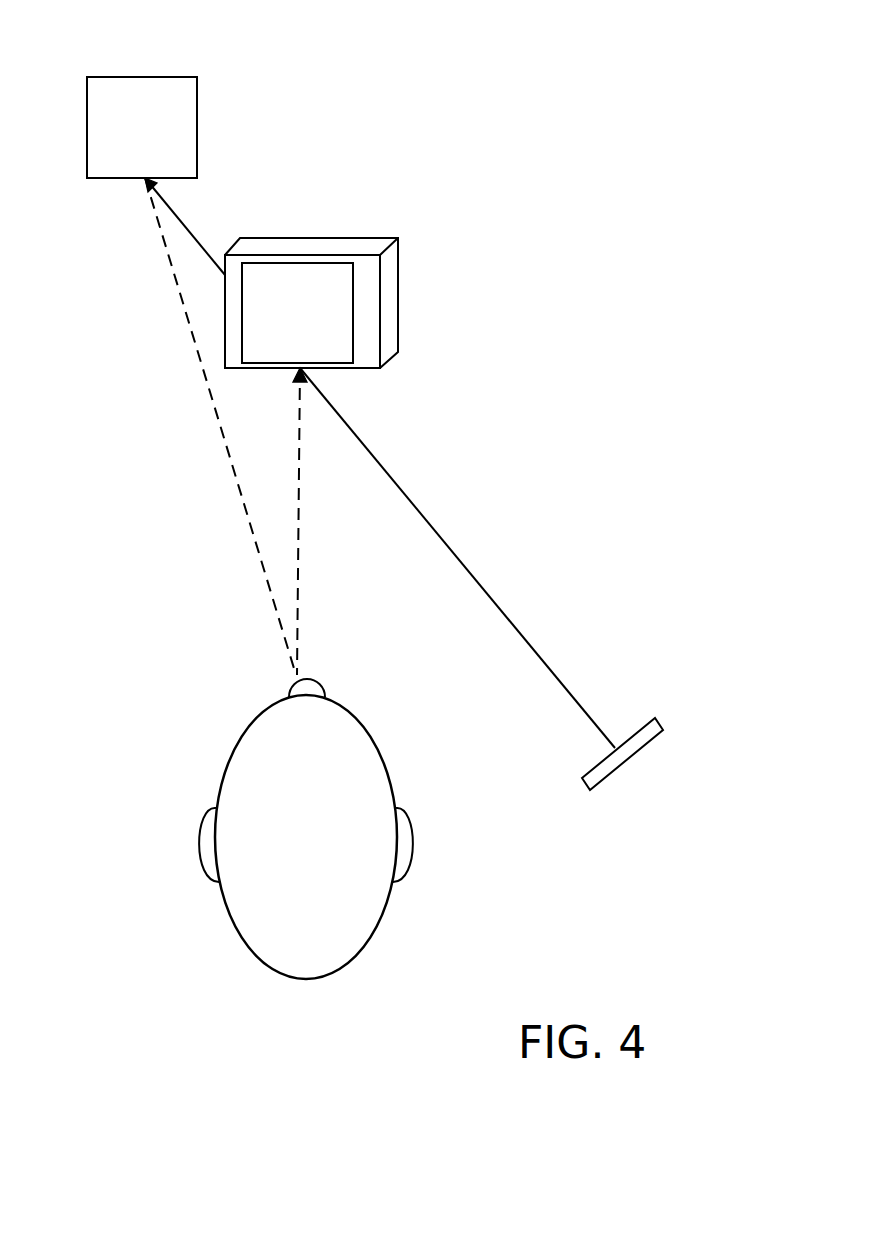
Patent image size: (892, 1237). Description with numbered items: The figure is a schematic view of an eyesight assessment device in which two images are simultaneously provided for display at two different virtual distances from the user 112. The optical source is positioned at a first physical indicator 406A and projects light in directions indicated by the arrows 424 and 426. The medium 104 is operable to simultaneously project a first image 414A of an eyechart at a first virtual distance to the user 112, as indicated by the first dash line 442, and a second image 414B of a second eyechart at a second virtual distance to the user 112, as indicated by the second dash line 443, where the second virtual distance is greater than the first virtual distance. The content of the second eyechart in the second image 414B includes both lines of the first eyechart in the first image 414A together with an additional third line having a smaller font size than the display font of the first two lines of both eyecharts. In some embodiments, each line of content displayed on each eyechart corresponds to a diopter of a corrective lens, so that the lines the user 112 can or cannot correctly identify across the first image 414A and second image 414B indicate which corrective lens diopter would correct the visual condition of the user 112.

The second image 414B is at (197, 118).
The medium 104 is at (337, 237).
The first image 414A is at (348, 283).
The arrow 426 is at (195, 240).
The second dash line 443 is at (222, 436).
The first dash line 442 is at (298, 588).
The arrow 424 is at (362, 438).
The first physical indicator 406A is at (657, 722).
The user 112 is at (363, 948).